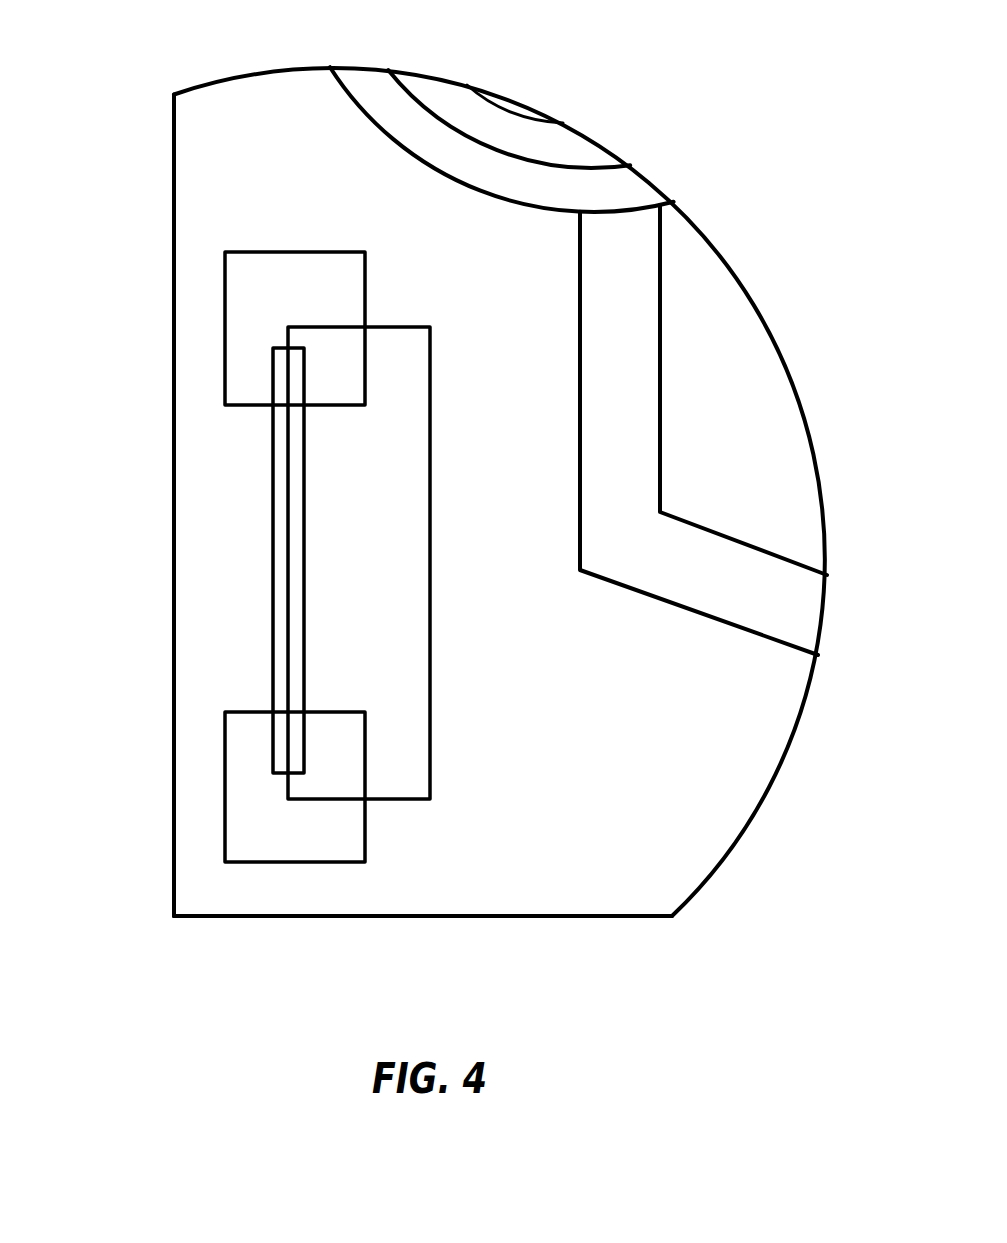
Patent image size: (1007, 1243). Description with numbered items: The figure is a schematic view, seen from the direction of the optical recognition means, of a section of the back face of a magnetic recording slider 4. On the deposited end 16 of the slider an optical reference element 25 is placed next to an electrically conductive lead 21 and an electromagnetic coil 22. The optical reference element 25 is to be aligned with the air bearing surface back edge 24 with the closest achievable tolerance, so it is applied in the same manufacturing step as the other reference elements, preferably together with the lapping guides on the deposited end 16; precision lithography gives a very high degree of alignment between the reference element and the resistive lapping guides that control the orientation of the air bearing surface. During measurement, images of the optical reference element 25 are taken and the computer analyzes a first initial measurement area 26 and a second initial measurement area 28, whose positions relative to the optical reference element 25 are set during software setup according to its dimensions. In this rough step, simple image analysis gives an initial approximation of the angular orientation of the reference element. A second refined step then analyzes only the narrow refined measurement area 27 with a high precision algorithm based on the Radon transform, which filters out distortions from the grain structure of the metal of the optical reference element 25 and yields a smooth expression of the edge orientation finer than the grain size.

The magnetic recording slider 4 is at (420, 917).
The deposited end 16 is at (527, 880).
The electrically conductive lead 21 is at (698, 588).
The electromagnetic coil 22 is at (498, 163).
The air bearing surface back edge 24 is at (174, 445).
The optical reference element 25 is at (409, 680).
The first initial measurement area 26 is at (297, 862).
The refined measurement area 27 is at (273, 622).
The second initial measurement area 28 is at (297, 251).